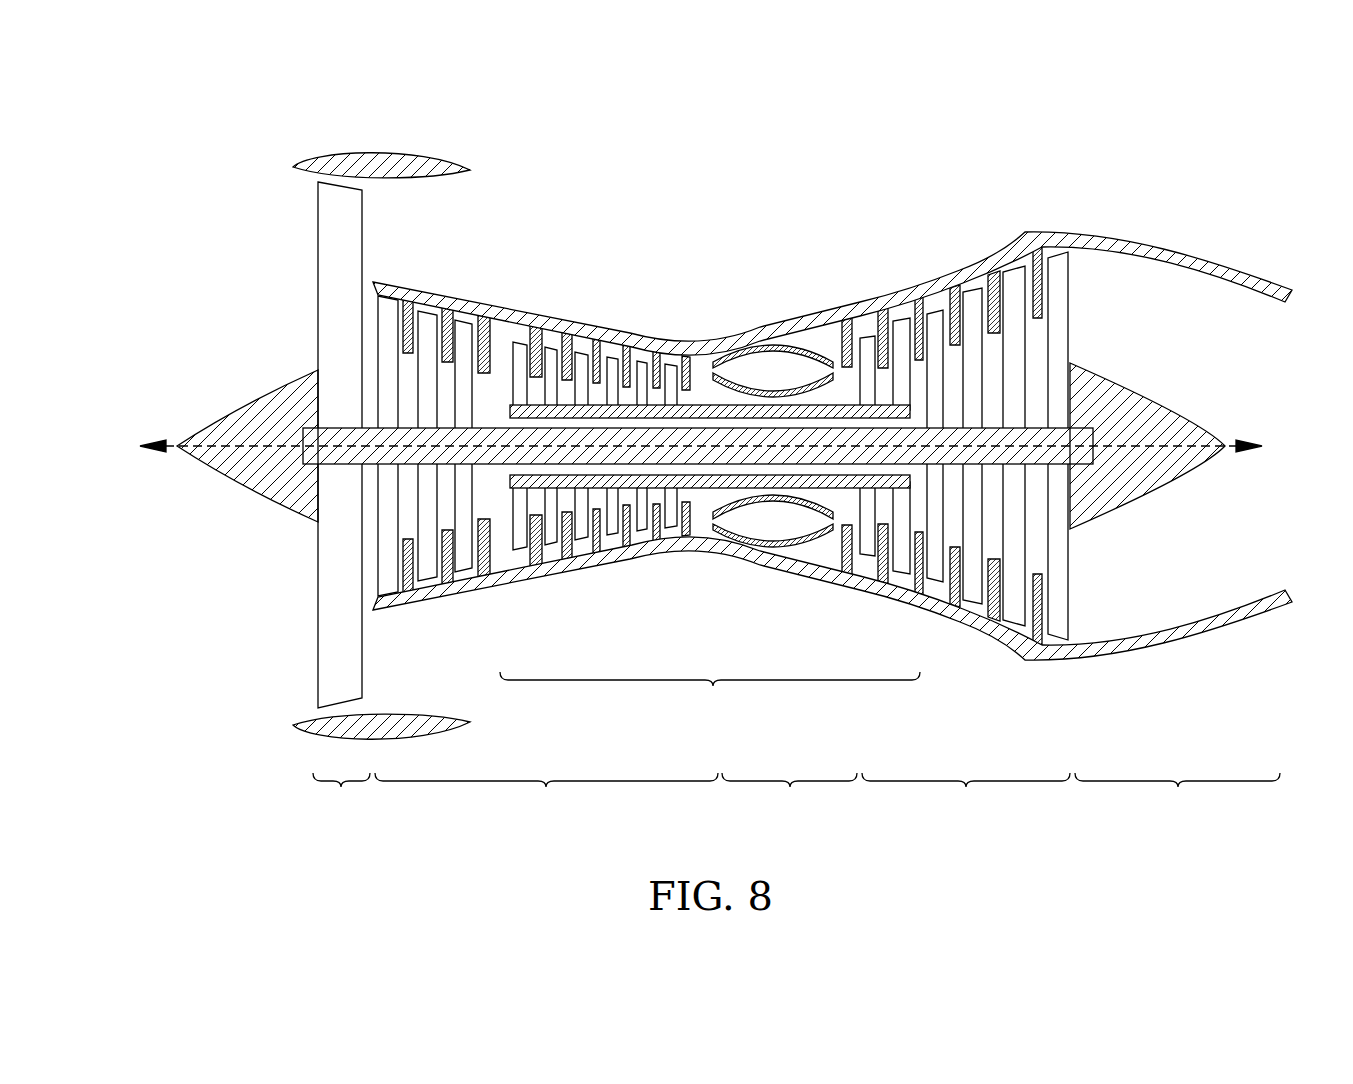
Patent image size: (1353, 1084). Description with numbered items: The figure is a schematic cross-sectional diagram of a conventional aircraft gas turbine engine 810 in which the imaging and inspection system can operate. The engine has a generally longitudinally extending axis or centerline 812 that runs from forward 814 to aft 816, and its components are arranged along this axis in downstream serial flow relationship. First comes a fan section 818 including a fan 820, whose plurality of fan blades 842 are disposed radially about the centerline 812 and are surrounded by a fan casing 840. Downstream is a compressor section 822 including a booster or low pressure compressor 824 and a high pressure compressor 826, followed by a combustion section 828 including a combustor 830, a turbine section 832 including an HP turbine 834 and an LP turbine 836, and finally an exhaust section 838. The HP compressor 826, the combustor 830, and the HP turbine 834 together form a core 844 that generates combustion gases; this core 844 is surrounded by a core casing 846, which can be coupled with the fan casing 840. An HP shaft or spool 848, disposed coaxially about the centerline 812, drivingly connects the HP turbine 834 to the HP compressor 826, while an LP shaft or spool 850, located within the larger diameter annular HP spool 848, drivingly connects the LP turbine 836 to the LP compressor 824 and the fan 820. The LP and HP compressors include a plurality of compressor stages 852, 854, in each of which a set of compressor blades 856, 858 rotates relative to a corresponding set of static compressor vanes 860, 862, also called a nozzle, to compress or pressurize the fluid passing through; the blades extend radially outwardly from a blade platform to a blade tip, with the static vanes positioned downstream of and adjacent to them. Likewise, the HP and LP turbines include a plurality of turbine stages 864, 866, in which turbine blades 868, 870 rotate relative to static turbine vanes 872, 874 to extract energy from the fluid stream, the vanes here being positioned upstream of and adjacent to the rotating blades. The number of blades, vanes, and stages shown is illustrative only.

The gas turbine engine 810 is at (198, 128).
The centerline 812 is at (260, 443).
The forward 814 is at (164, 451).
The aft 816 is at (1238, 449).
The fan section 818 is at (341, 796).
The fan 820 is at (296, 264).
The compressor section 822 is at (546, 796).
The low pressure compressor 824 is at (502, 588).
The high pressure compressor 826 is at (640, 564).
The combustion section 828 is at (789, 796).
The combustor 830 is at (831, 356).
The turbine section 832 is at (966, 796).
The HP turbine 834 is at (843, 596).
The LP turbine 836 is at (960, 630).
The exhaust section 838 is at (1177, 796).
The fan casing 840 is at (372, 152).
The fan blades 842 is at (332, 665).
The core 844 is at (710, 694).
The core casing 846 is at (796, 342).
The HP shaft 848 is at (692, 412).
The LP shaft 850 is at (432, 438).
The compressor stage 852 is at (378, 263).
The compressor stage 854 is at (499, 303).
The compressor blades 856 is at (390, 313).
The compressor blades 858 is at (514, 345).
The static compressor vanes 860 is at (407, 338).
The static compressor vanes 862 is at (541, 350).
The turbine stage 864 is at (881, 272).
The turbine stage 866 is at (972, 257).
The turbine blades 868 is at (900, 397).
The turbine blades 870 is at (1015, 297).
The static turbine vanes 872 is at (883, 347).
The static turbine vanes 874 is at (993, 280).